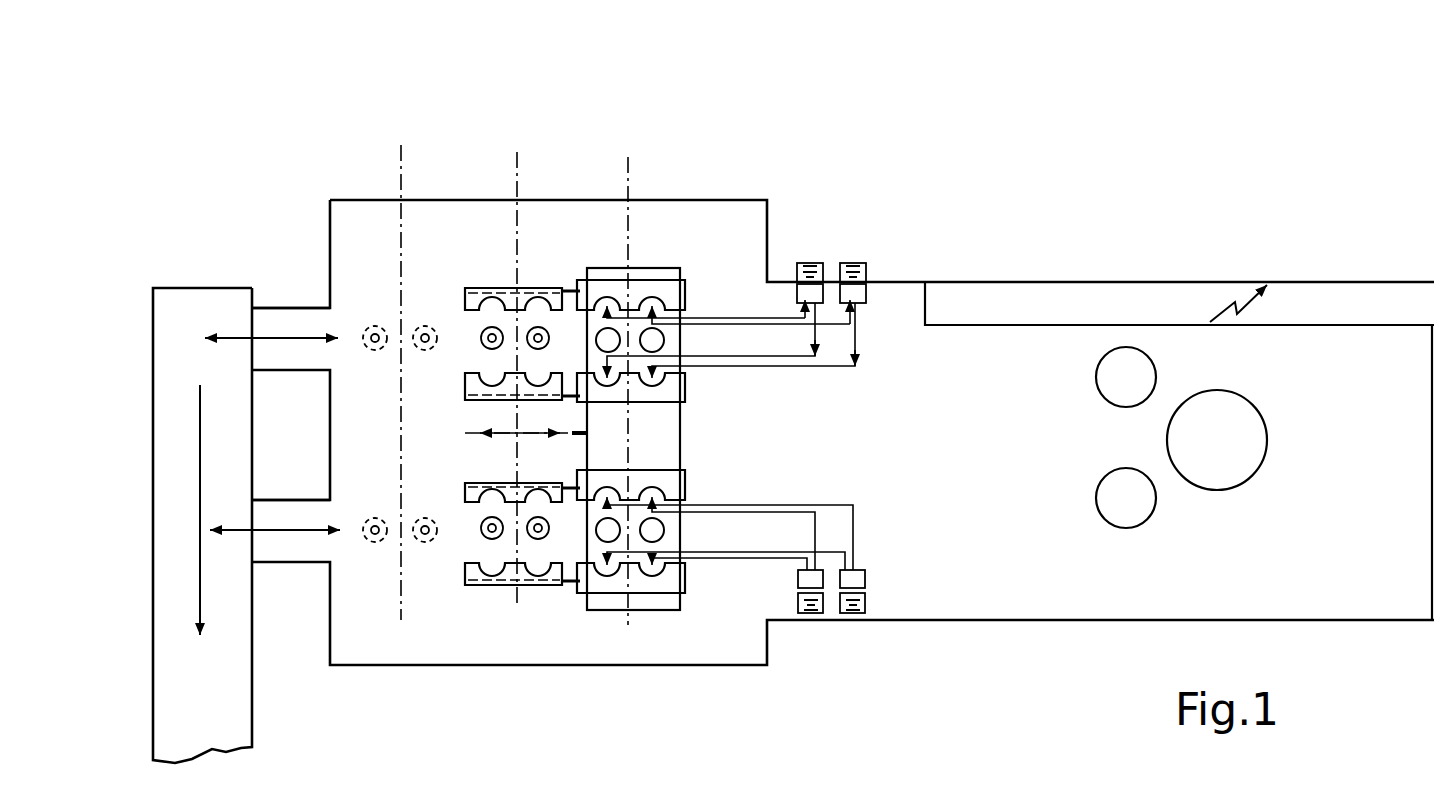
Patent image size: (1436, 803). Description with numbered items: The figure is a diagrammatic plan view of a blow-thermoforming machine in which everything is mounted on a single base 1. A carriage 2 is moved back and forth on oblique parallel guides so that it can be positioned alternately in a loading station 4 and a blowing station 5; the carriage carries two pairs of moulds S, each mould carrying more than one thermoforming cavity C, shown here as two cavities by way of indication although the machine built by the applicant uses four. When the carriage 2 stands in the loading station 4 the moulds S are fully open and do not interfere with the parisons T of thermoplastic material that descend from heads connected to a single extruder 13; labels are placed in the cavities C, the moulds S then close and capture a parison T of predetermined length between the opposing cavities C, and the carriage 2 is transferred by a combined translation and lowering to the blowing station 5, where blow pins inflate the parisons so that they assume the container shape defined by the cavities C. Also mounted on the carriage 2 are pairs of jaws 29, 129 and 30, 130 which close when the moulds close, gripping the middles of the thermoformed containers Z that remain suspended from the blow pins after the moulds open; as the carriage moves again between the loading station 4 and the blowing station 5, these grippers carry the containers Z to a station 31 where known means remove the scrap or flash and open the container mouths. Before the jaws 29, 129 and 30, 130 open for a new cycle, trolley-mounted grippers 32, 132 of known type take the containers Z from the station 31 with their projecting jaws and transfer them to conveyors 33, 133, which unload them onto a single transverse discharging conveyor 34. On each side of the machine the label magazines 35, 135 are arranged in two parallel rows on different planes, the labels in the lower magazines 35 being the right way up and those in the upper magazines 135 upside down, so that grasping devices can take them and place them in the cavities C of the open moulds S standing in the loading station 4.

The base 1 is at (1000, 620).
The carriage 2 is at (695, 442).
The loading station 4 is at (630, 155).
The blowing station 5 is at (519, 150).
The extruder 13 is at (1162, 440).
The jaw 29 is at (486, 297).
The jaw 30 is at (466, 483).
The station 31 is at (403, 143).
The trolley-mounted gripper 32 is at (296, 338).
The conveyor 33 is at (270, 308).
The transverse discharging conveyor 34 is at (160, 476).
The label magazine 35 is at (862, 300).
The jaw 129 is at (466, 390).
The jaw 130 is at (478, 588).
The trolley-mounted gripper 132 is at (273, 530).
The conveyor 133 is at (298, 500).
The label magazine 135 is at (847, 262).
The thermoformed container Z is at (418, 330).
The thermoforming cavity C is at (653, 300).
The mould S is at (688, 282).
The parison T is at (654, 340).